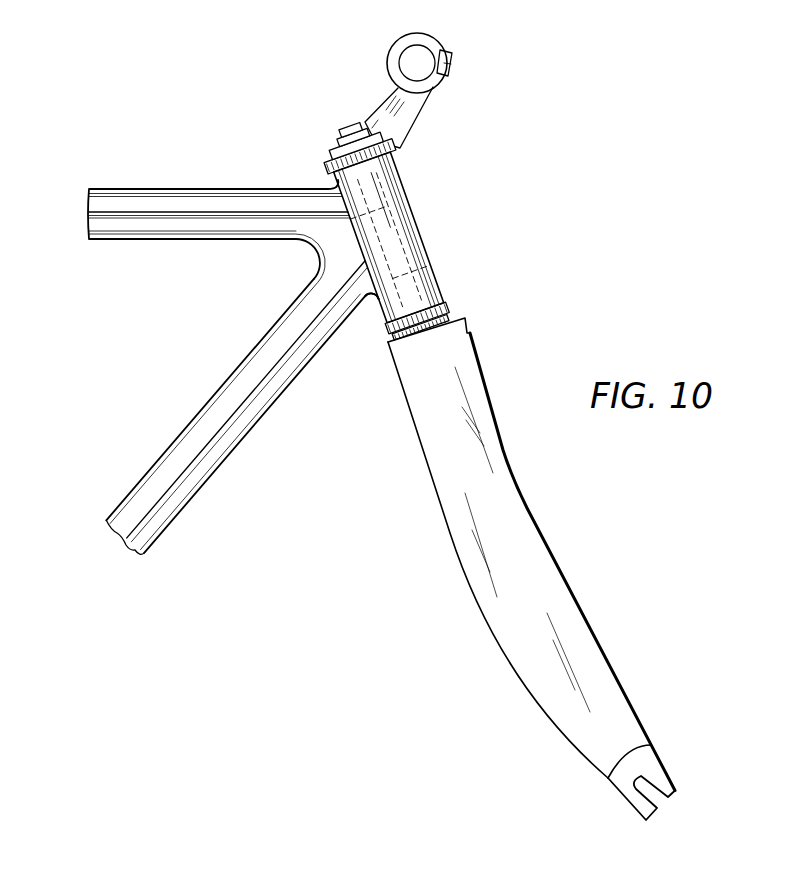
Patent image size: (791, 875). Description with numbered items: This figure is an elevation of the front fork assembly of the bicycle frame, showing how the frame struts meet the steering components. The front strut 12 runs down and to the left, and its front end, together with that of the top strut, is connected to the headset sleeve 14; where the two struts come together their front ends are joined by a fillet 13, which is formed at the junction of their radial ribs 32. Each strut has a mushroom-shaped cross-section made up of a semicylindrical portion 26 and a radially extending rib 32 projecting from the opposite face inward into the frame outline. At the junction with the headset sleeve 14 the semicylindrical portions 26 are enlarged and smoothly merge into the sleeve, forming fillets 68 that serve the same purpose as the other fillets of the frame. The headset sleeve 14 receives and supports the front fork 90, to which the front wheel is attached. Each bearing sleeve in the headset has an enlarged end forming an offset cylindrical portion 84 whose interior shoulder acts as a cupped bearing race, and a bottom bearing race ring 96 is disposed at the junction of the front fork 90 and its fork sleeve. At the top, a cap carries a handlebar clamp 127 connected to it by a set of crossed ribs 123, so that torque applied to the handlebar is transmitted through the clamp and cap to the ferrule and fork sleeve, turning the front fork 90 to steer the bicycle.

The front strut 12 is at (233, 354).
The fillet 13 is at (336, 257).
The headset sleeve 14 is at (427, 228).
The semicylindrical portion 26 is at (224, 188).
The rib 32 is at (207, 241).
The fillet 68 is at (376, 311).
The offset cylindrical portion 84 is at (447, 313).
The front fork 90 is at (533, 501).
The bottom bearing race ring 96 is at (447, 321).
The crossed ribs 123 is at (401, 92).
The handlebar clamp 127 is at (432, 82).